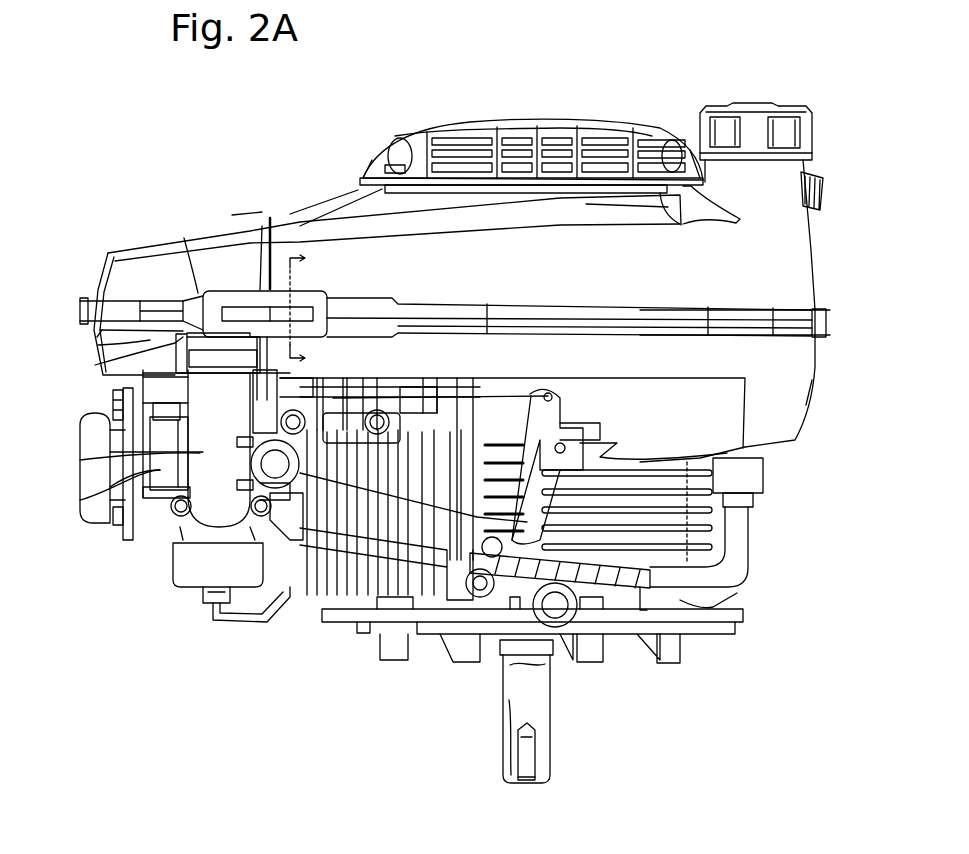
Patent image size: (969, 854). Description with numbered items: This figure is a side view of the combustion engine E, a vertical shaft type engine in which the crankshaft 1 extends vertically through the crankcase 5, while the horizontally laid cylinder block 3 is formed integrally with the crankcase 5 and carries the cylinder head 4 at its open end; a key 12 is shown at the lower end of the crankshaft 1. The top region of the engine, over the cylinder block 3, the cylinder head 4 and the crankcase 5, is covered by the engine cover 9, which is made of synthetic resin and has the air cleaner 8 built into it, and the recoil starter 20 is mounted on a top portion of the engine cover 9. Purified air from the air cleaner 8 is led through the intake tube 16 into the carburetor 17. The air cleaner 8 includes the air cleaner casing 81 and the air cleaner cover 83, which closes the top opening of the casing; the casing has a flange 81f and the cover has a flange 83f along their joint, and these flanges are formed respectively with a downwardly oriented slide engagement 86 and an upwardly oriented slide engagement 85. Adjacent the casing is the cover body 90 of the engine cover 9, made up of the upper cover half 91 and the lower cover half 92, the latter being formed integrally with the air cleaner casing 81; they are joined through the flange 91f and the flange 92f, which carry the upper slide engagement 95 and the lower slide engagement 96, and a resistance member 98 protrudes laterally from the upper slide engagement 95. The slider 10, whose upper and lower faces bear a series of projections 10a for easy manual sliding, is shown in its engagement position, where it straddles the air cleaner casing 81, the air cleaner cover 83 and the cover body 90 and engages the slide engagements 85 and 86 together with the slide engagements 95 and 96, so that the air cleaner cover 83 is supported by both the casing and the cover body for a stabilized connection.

The combustion engine E is at (252, 178).
The crankshaft 1 is at (555, 711).
The cylinder block 3 is at (310, 587).
The cylinder head 4 is at (158, 472).
The crankcase 5 is at (695, 605).
The air cleaner 8 is at (145, 234).
The engine cover 9 is at (820, 392).
The slider 10 is at (291, 269).
The projections 10a is at (261, 300).
The key 12 is at (546, 772).
The intake tube 16 is at (80, 470).
The carburetor 17 is at (180, 528).
The recoil starter 20 is at (553, 128).
The air cleaner casing 81 is at (102, 347).
The flange of air cleaner casing 81f is at (103, 340).
The air cleaner cover 83 is at (112, 278).
The flange of air cleaner cover 83f is at (97, 298).
The upwardly oriented slide engagement 85 is at (184, 238).
The downwardly oriented slide engagement 86 is at (110, 330).
The cover body 90 is at (772, 305).
The upper cover half 91 is at (806, 284).
The flange of upper cover half 91f is at (660, 310).
The lower cover half 92 is at (792, 354).
The flange of lower cover half 92f is at (663, 322).
The upper slide engagement 95 is at (360, 298).
The lower slide engagement 96 is at (365, 327).
The resistance member 98 is at (293, 303).